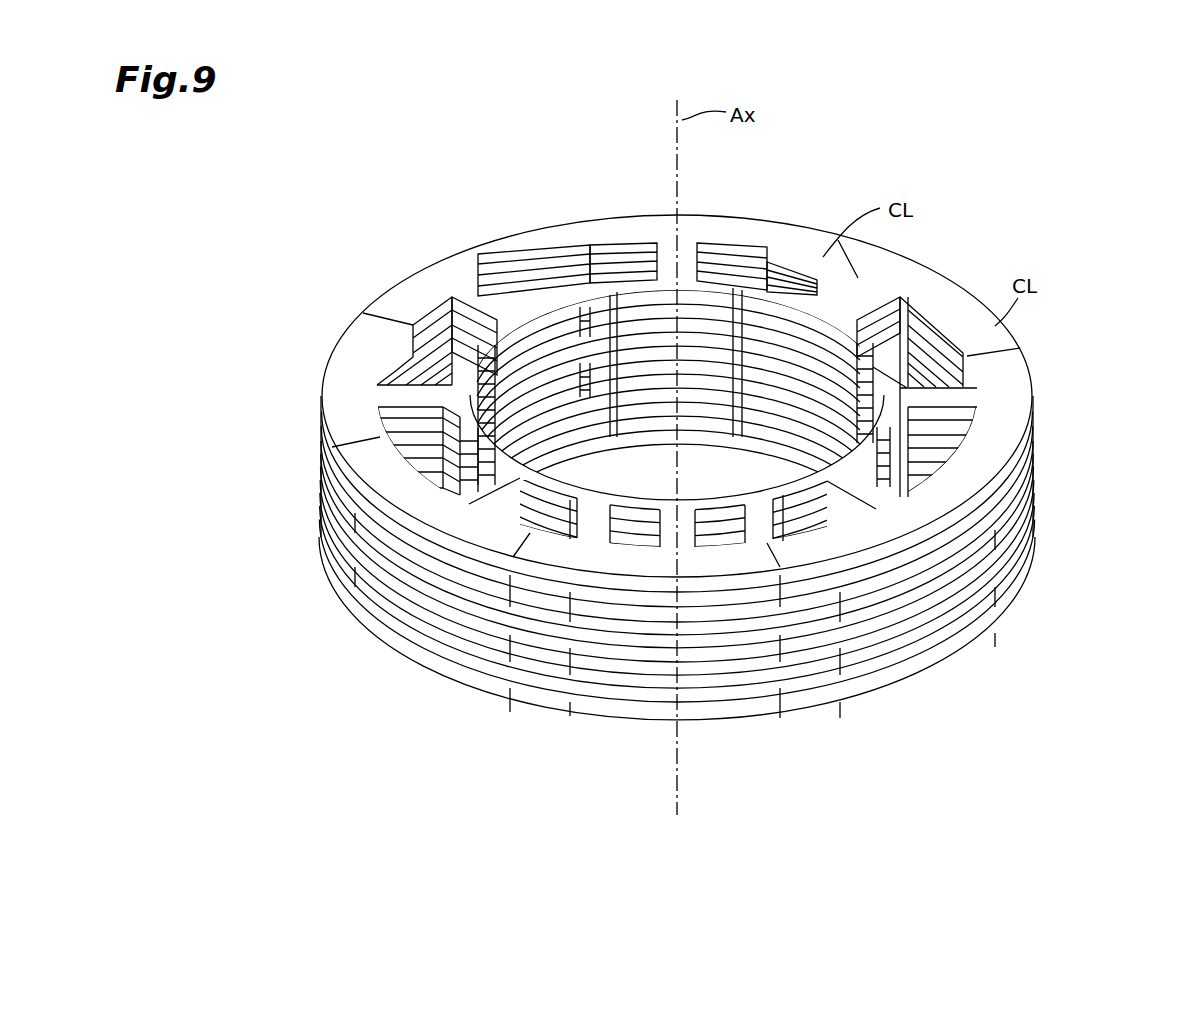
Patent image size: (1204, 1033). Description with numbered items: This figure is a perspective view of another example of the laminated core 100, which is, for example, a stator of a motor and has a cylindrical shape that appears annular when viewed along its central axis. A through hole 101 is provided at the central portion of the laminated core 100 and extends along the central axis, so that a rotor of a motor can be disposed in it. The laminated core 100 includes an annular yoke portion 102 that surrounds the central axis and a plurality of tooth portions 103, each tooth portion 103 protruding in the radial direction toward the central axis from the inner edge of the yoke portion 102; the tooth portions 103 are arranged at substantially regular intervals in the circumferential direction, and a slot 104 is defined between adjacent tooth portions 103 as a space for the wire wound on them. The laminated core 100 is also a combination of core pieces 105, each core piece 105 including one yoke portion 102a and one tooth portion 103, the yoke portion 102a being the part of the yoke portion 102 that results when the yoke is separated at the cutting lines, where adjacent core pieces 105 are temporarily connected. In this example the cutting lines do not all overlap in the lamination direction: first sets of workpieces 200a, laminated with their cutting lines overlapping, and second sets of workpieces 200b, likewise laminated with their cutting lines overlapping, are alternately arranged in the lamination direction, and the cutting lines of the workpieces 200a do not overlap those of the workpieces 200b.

The laminated core 100 is at (1018, 163).
The through hole 101 is at (731, 468).
The yoke portion 102 is at (573, 243).
The yoke portion 102a is at (1003, 421).
The tooth portion 103 is at (485, 276).
The slot 104 is at (428, 336).
The core piece 105 is at (343, 352).
The workpiece 200a is at (643, 598).
The workpiece 200b is at (737, 613).